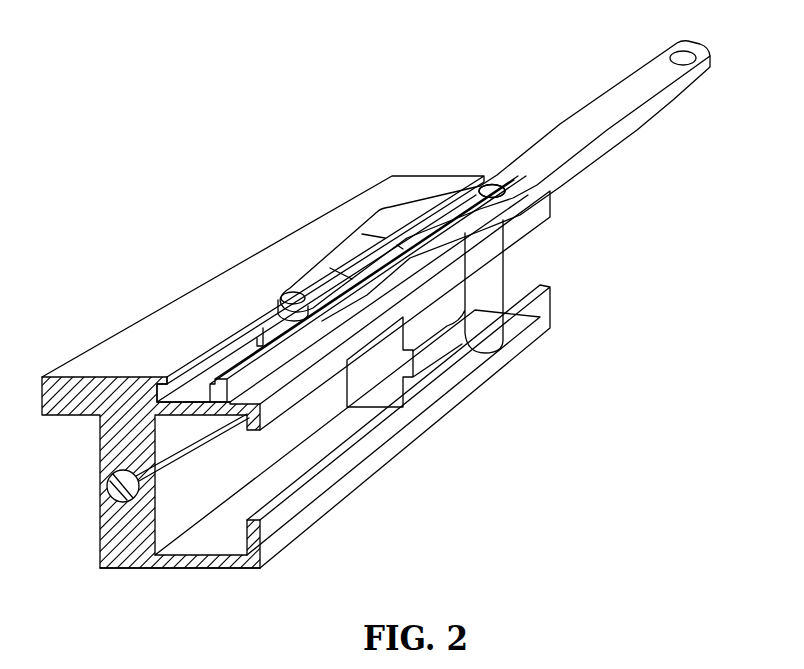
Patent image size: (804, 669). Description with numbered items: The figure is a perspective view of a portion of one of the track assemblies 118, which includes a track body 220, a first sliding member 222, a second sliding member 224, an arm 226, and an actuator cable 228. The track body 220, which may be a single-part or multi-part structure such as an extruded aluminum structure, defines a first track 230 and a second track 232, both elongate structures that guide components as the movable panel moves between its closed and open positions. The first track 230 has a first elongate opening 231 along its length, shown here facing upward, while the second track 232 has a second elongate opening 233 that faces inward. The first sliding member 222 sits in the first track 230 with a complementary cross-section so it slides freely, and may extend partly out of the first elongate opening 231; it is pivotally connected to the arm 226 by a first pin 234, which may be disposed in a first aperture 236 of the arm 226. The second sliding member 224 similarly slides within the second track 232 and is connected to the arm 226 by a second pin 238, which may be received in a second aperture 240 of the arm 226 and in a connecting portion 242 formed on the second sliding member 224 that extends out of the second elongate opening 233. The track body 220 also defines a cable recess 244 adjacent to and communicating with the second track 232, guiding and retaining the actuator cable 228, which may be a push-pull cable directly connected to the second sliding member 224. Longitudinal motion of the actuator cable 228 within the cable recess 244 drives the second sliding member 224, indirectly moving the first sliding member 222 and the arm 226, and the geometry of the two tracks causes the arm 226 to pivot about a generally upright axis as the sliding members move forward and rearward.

The track assembly 118 is at (156, 250).
The track body 220 is at (100, 343).
The first sliding member 222 is at (262, 340).
The second sliding member 224 is at (394, 394).
The arm 226 is at (563, 128).
The actuator cable 228 is at (106, 462).
The first track 230 is at (191, 401).
The first elongate opening 231 is at (212, 361).
The second track 232 is at (224, 567).
The second elongate opening 233 is at (281, 500).
The first pin 234 is at (287, 292).
The first aperture 236 is at (303, 290).
The second pin 238 is at (479, 190).
The second aperture 240 is at (488, 185).
The connecting portion 242 is at (505, 258).
The cable recess 244 is at (105, 482).